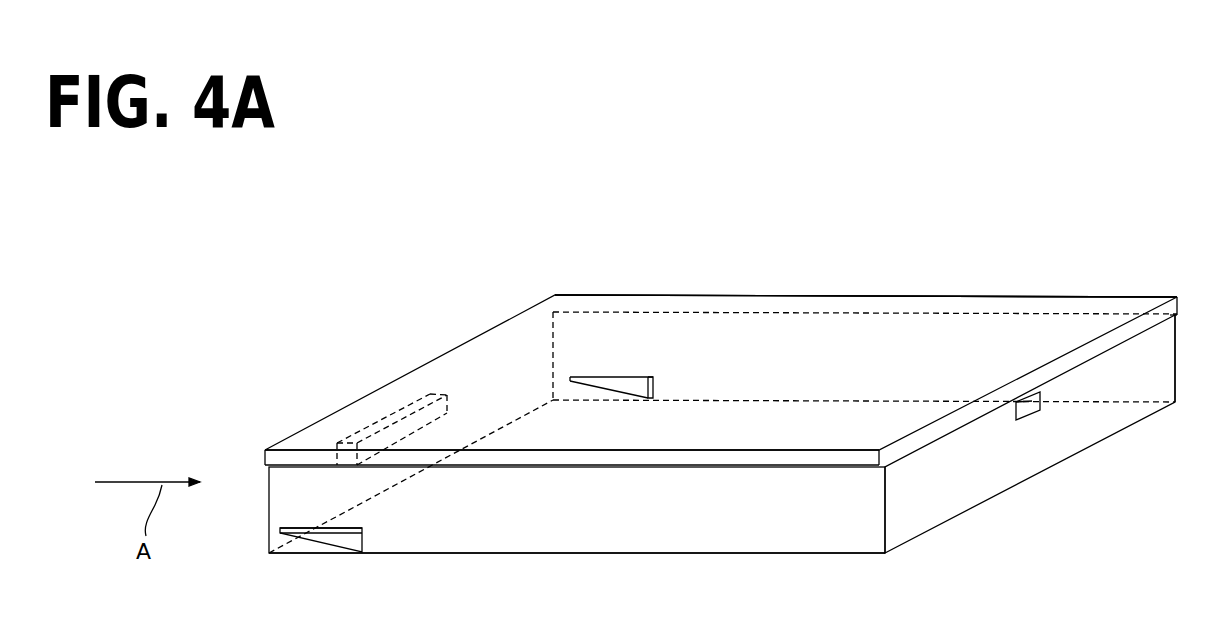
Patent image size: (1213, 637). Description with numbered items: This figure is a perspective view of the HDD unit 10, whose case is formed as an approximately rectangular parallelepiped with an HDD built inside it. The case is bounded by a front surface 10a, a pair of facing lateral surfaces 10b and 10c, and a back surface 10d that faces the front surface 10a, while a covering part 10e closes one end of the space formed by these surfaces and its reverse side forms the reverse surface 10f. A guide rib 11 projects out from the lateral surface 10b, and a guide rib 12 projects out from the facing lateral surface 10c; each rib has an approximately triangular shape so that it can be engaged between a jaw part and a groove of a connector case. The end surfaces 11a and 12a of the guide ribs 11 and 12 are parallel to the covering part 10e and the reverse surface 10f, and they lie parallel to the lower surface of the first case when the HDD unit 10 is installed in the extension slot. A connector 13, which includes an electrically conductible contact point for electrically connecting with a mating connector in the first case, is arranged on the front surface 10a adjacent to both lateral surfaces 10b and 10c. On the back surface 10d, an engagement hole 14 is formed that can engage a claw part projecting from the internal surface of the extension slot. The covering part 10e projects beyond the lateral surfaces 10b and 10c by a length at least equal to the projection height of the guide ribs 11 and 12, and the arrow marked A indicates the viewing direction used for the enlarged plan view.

The HDD unit 10 is at (485, 225).
The front surface 10a is at (492, 381).
The lateral surface 10b is at (593, 503).
The lateral surface 10c is at (778, 363).
The back surface 10d is at (980, 475).
The covering part 10e is at (977, 331).
The reverse surface 10f is at (840, 563).
The guide rib 11 is at (333, 540).
The end surface 11a is at (320, 525).
The guide rib 12 is at (660, 378).
The end surface 12a is at (620, 377).
The connector 13 is at (395, 413).
The engagement hole 14 is at (1027, 413).